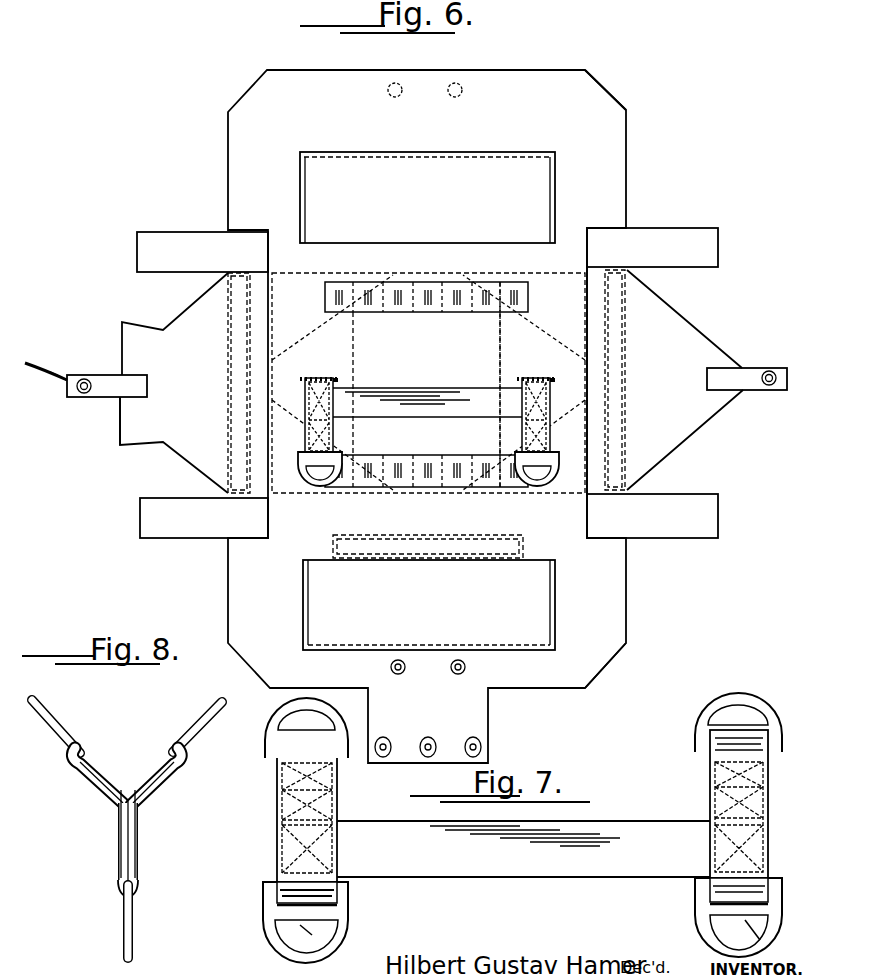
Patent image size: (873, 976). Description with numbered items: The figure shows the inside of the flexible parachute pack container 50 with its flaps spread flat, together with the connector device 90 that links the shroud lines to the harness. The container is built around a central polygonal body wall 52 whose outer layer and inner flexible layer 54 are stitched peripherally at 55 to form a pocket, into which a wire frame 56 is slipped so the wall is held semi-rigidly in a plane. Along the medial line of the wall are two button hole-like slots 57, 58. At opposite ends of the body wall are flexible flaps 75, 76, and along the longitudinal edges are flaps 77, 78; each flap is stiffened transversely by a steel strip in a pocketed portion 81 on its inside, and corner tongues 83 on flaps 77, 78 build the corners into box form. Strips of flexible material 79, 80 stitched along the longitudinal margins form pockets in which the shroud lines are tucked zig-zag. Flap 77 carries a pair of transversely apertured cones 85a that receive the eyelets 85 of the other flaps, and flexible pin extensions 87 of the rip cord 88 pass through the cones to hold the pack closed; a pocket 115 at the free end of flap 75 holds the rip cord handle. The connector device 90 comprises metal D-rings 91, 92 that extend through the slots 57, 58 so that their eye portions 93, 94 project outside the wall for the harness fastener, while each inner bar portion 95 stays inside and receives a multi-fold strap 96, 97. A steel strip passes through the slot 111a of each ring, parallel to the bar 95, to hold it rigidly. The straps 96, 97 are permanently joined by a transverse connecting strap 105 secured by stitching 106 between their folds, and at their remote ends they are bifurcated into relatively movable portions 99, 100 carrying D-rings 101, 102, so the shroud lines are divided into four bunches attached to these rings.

In FIG. 6, the flexible container 50 is at (612, 204).
In FIG. 6, the body wall 52 is at (428, 383).
In FIG. 6, the inner flexible layer 54 is at (570, 276).
In FIG. 6, the peripheral stitching 55 is at (304, 281).
In FIG. 6, the wire frame 56 is at (500, 361).
In FIG. 6, the elongated slot 57 is at (553, 388).
In FIG. 6, the elongated slot 58 is at (340, 383).
In FIG. 6, the flexible flap 75 is at (200, 312).
In FIG. 6, the flexible flap 76 is at (695, 346).
In FIG. 6, the flexible flap 77 is at (598, 105).
In FIG. 6, the flexible flap 78 is at (620, 626).
In FIG. 6, the strip of flexible material 79 is at (396, 292).
In FIG. 6, the strip of flexible material 80 is at (528, 221).
In FIG. 6, the pocketed portion 81 is at (230, 388).
In FIG. 6, the corner tongue 83 is at (202, 247).
In FIG. 6, the eyelet 85 is at (85, 394).
In FIG. 6, the transversely apertured cone 85a is at (400, 96).
In FIG. 6, the flexible pin extension 87 is at (27, 368).
In FIG. 6, the flexible rip cord 88 is at (66, 386).
In FIG. 6, the connector device 90 is at (457, 403).
In FIG. 7, the connector device 90 is at (523, 850).
In FIG. 6, the D-ring 91 is at (304, 380).
In FIG. 7, the D-ring 91 is at (333, 915).
In FIG. 6, the D-ring 92 is at (520, 378).
In FIG. 7, the D-ring 92 is at (739, 906).
In FIG. 8, the D-ring 92 is at (126, 932).
In FIG. 7, the eye portion 93 is at (310, 955).
In FIG. 7, the eye portion 94 is at (761, 936).
In FIG. 7, the inner bar portion 95 is at (341, 881).
In FIG. 6, the multi-fold strap 96 is at (308, 414).
In FIG. 7, the multi-fold strap 96 is at (313, 819).
In FIG. 6, the multi-fold strap 97 is at (548, 405).
In FIG. 7, the multi-fold strap 97 is at (768, 805).
In FIG. 8, the multi-fold strap 97 is at (151, 843).
In FIG. 8, the relatively movable portion 99 is at (96, 777).
In FIG. 8, the relatively movable portion 100 is at (161, 776).
In FIG. 7, the D-ring 101 is at (277, 739).
In FIG. 8, the D-ring 101 is at (56, 733).
In FIG. 6, the D-ring 102 is at (300, 472).
In FIG. 8, the D-ring 102 is at (200, 733).
In FIG. 7, the transverse connecting strap 105 is at (610, 823).
In FIG. 8, the transverse connecting strap 105 is at (130, 863).
In FIG. 7, the stitching 106 is at (326, 841).
In FIG. 7, the slot of D-ring 111a is at (322, 907).
In FIG. 6, the pocket 115 is at (122, 446).